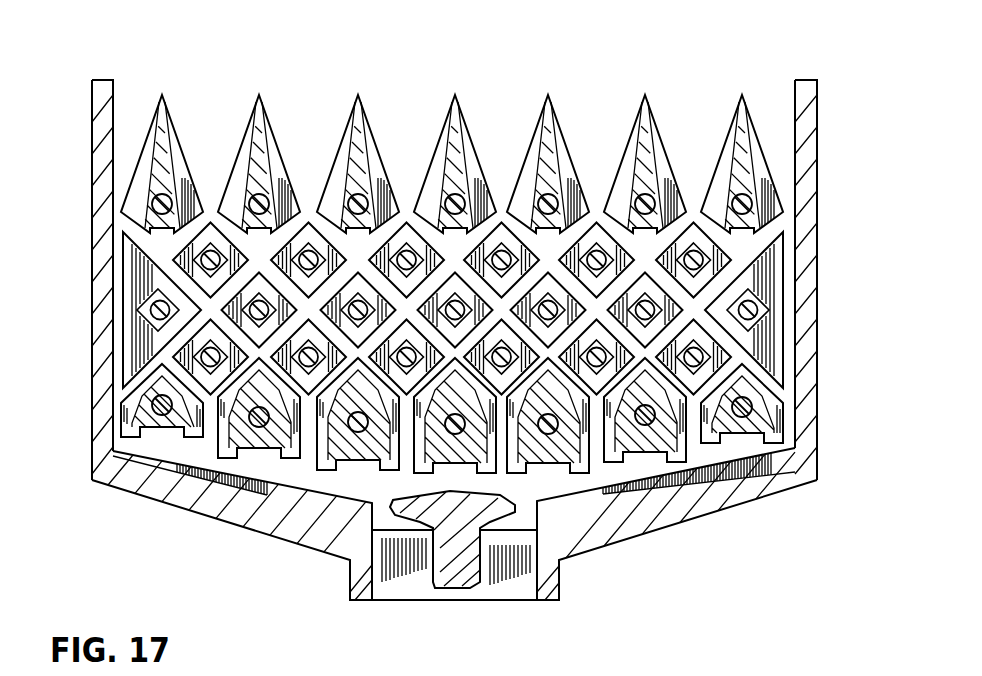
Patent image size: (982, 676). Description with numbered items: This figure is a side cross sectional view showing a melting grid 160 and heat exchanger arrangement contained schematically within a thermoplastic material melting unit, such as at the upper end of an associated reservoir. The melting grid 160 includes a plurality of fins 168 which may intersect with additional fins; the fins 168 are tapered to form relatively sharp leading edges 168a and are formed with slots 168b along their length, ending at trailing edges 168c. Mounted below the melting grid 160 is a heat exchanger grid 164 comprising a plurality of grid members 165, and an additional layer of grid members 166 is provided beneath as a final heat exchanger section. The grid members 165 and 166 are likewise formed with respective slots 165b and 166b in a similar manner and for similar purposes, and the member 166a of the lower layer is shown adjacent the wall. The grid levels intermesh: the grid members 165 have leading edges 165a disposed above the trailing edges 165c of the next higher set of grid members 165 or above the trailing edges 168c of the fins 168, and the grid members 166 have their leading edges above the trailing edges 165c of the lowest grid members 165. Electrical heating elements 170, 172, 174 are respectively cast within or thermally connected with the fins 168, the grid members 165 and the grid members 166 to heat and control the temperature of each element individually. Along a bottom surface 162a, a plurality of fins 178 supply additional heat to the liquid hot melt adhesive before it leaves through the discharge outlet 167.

The melting grid 160 is at (627, 62).
The bottom surface 162a is at (606, 492).
The heat exchanger grid 164 is at (120, 242).
The grid member 165 is at (582, 228).
The leading edge 165a is at (692, 222).
The slot 165b is at (505, 223).
The trailing edge 165c is at (738, 360).
The grid member 166 is at (188, 513).
The side lattice member 166a is at (167, 363).
The slot 166b is at (285, 473).
The discharge outlet 167 is at (500, 590).
The fin 168 is at (345, 120).
The leading edge 168a is at (460, 110).
The slot 168b is at (238, 183).
The trailing edge 168c is at (758, 250).
The electrical heating element 170 is at (345, 190).
The electrical heating element 172 is at (152, 298).
The electrical heating element 174 is at (163, 407).
The fin 178 is at (180, 490).